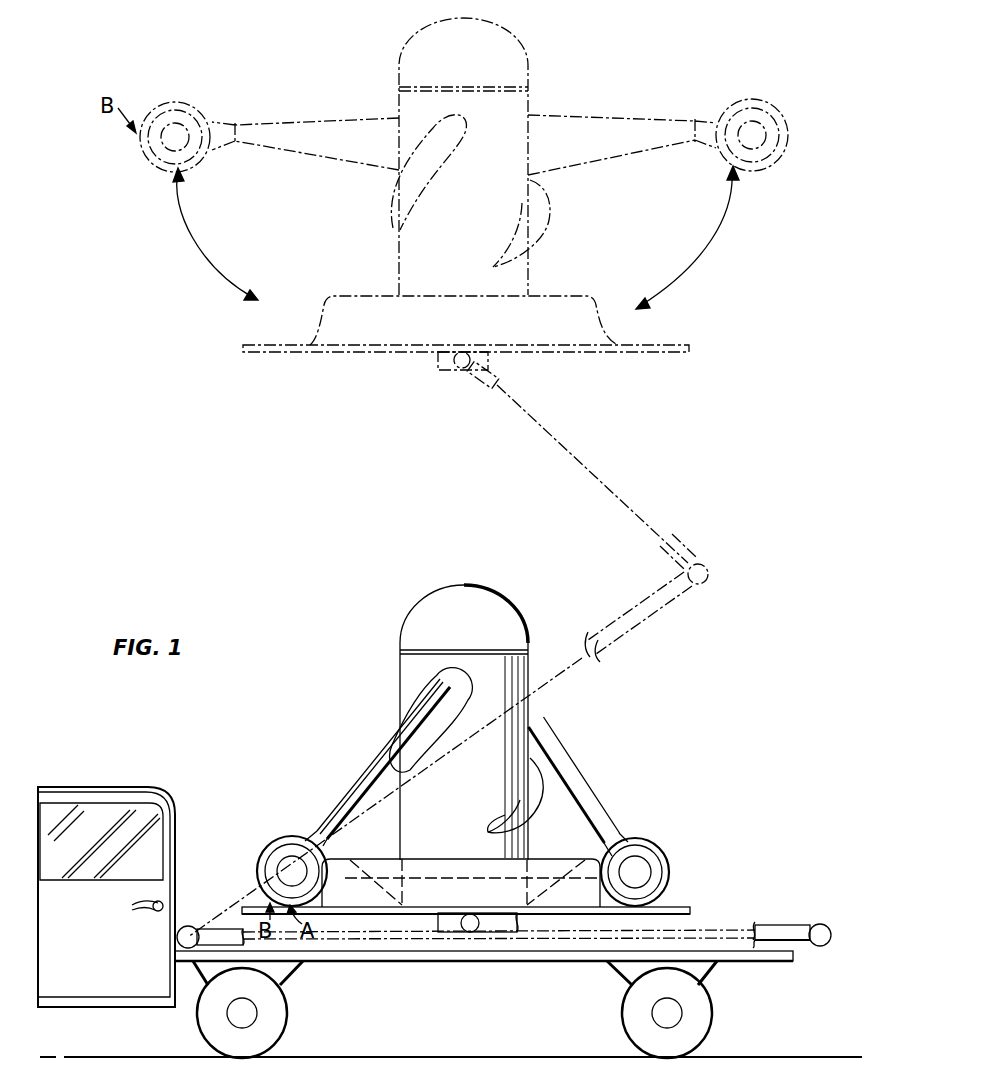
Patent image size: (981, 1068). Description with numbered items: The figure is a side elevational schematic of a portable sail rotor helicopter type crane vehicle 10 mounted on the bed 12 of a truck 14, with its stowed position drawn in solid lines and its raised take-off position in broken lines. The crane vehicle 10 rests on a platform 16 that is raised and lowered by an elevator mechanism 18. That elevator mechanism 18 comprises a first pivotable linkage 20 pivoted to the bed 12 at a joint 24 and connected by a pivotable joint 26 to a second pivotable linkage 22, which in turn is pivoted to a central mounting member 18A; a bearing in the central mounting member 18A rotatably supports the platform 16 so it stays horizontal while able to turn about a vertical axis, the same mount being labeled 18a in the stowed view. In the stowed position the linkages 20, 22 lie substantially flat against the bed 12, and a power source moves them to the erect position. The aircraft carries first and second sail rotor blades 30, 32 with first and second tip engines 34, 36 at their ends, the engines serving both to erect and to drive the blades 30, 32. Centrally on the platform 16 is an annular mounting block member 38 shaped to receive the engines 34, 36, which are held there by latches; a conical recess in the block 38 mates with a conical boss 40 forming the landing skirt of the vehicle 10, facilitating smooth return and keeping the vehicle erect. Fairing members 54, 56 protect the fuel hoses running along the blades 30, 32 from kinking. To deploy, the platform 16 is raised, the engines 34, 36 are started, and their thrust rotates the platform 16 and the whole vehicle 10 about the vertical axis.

The sail rotor helicopter type crane vehicle 10 is at (537, 48).
The bed 12 is at (368, 958).
The truck 14 is at (174, 824).
The platform 16 is at (667, 347).
The elevator mechanism 18 is at (782, 923).
The central mounting member 18A is at (445, 361).
The pivot pin (lowered position) 18a is at (438, 932).
The first pivotable linkage 20 is at (772, 942).
The second pivotable linkage 22 is at (756, 922).
The joint 24 is at (178, 938).
The pivotable joint 26 is at (710, 572).
The first sail rotor blade 30 is at (318, 147).
The second sail rotor blade 32 is at (618, 143).
The first tip engine 34 is at (160, 164).
The second tip engine 36 is at (762, 168).
The annular mounting block member 38 is at (347, 320).
The conical boss 40 is at (533, 878).
The external fairing member 54 is at (458, 692).
The fairing member 56 is at (506, 808).